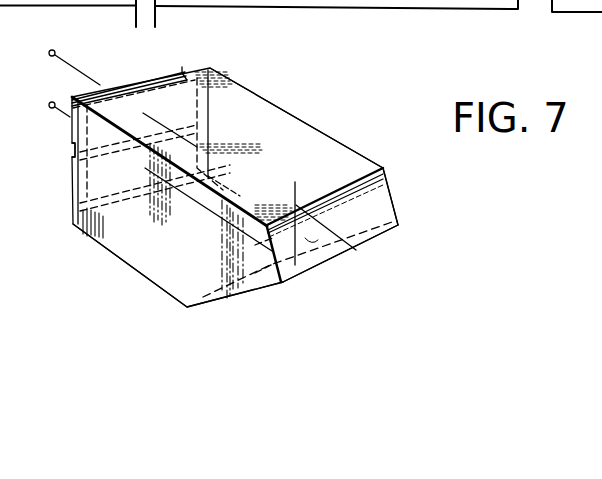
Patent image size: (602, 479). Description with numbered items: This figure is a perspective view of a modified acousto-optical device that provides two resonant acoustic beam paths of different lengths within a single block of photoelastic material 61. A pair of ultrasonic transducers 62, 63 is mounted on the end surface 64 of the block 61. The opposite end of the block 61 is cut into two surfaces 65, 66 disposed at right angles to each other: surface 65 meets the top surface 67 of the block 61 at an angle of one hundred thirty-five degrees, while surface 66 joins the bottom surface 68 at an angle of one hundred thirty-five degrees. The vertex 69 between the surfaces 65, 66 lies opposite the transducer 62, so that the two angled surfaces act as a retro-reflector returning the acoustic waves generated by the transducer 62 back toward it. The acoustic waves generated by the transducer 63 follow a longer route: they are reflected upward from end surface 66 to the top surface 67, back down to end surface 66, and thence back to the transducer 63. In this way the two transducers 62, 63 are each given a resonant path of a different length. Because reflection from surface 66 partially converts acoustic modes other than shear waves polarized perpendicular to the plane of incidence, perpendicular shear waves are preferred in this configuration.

The block of photoelastic material 61 is at (258, 95).
The ultrasonic transducer 62 is at (155, 74).
The ultrasonic transducer 63 is at (71, 190).
The end surface 64 is at (77, 210).
The surface 65 is at (382, 198).
The surface 66 is at (263, 289).
The top surface 67 is at (335, 157).
The bottom surface 68 is at (149, 279).
The vertex 69 is at (352, 247).